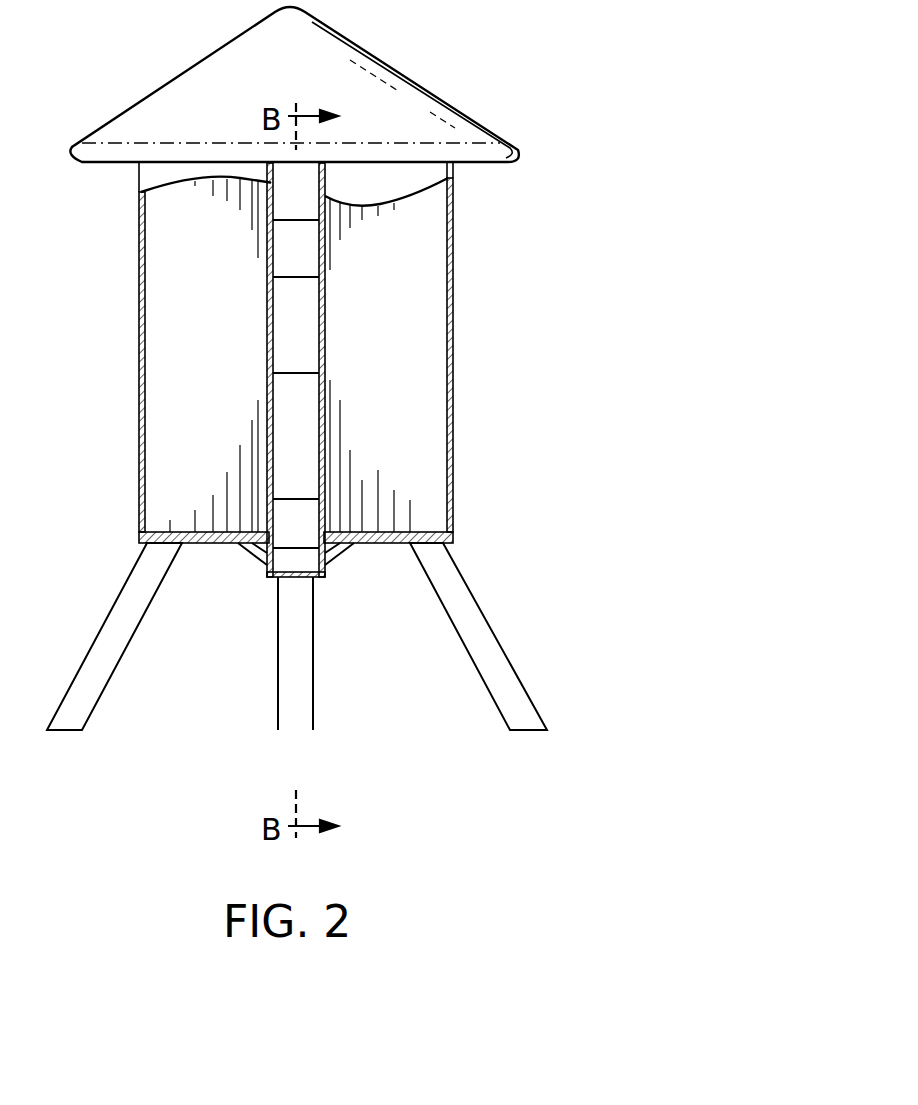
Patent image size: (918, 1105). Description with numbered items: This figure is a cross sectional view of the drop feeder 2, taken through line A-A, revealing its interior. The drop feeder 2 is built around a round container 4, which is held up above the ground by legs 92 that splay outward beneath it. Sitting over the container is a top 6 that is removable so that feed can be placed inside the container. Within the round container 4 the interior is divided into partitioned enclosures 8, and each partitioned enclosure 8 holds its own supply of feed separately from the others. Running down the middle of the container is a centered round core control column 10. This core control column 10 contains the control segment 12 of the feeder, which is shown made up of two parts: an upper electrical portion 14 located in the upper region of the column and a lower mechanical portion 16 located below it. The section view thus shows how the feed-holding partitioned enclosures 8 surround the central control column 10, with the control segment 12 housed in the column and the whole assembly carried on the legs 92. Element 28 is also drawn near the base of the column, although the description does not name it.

The drop feeder 2 is at (568, 322).
The round container 4 is at (455, 272).
The top 6 is at (425, 92).
The partitioned enclosure 8 is at (432, 443).
The centered round core control column 10 is at (267, 455).
The control segment 12 is at (238, 327).
The upper electrical portion 14 is at (267, 280).
The lower mechanical portion 16 is at (267, 515).
The support bracket 28 is at (248, 550).
The leg 92 is at (488, 628).